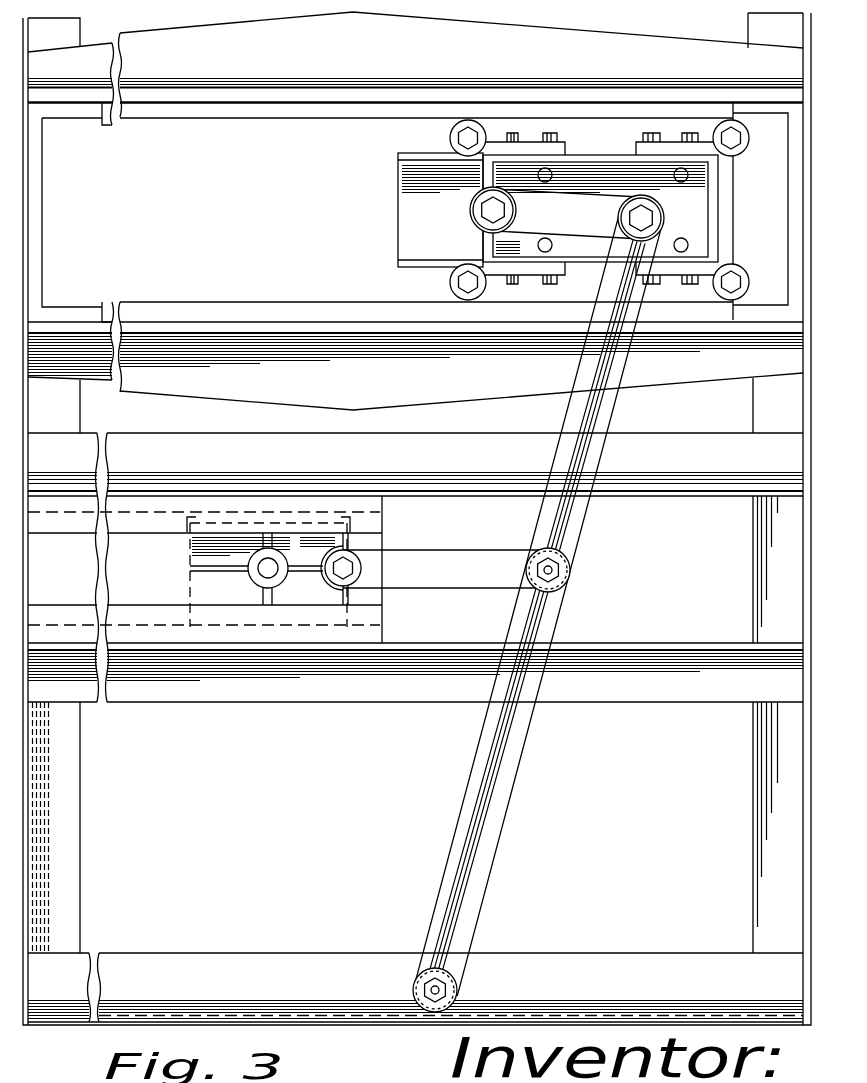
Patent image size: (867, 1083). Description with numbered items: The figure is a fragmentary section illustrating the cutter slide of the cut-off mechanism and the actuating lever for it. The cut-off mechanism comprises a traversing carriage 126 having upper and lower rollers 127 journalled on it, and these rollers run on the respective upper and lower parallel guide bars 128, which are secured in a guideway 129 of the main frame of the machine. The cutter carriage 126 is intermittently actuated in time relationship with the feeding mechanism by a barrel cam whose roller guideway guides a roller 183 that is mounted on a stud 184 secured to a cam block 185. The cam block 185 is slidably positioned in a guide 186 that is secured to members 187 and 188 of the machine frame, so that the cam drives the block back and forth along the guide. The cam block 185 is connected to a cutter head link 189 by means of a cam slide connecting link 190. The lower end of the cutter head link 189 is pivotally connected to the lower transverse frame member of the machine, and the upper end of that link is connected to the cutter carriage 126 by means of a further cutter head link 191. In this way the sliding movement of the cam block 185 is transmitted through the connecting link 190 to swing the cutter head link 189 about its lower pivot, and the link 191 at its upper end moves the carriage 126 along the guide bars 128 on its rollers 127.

The traversing carriage 126 is at (700, 193).
The upper and lower rollers 127 is at (450, 136).
The upper and lower parallel guide bars 128 is at (200, 121).
The guideway 129 is at (321, 90).
The roller 183 is at (266, 576).
The stud 184 is at (256, 576).
The cam block 185 is at (318, 598).
The guide 186 is at (382, 498).
The machine frame member 187 is at (494, 421).
The machine frame member 188 is at (412, 698).
The cutter head link 189 is at (517, 757).
The cam slide connecting link 190 is at (497, 533).
The cutter head link 191 is at (598, 204).